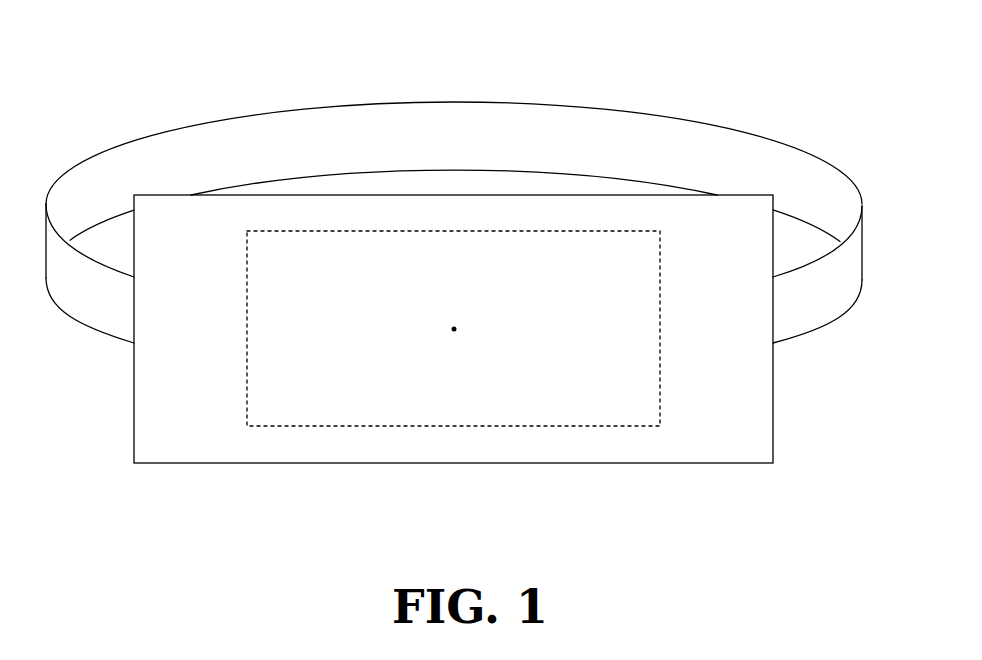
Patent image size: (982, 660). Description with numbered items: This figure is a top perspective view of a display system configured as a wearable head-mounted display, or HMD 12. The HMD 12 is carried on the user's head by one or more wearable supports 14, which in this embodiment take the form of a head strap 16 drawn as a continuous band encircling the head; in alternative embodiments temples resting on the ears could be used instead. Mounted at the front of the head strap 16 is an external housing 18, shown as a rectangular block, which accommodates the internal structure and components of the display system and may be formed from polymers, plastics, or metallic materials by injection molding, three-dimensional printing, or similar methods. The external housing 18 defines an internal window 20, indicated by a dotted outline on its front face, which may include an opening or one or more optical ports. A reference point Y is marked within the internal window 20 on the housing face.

The HMD 12 is at (513, 195).
The wearable support 14 is at (800, 147).
The head strap 16 is at (838, 277).
The external housing 18 is at (195, 427).
The internal window 20 is at (565, 428).
The reference point Y is at (454, 329).